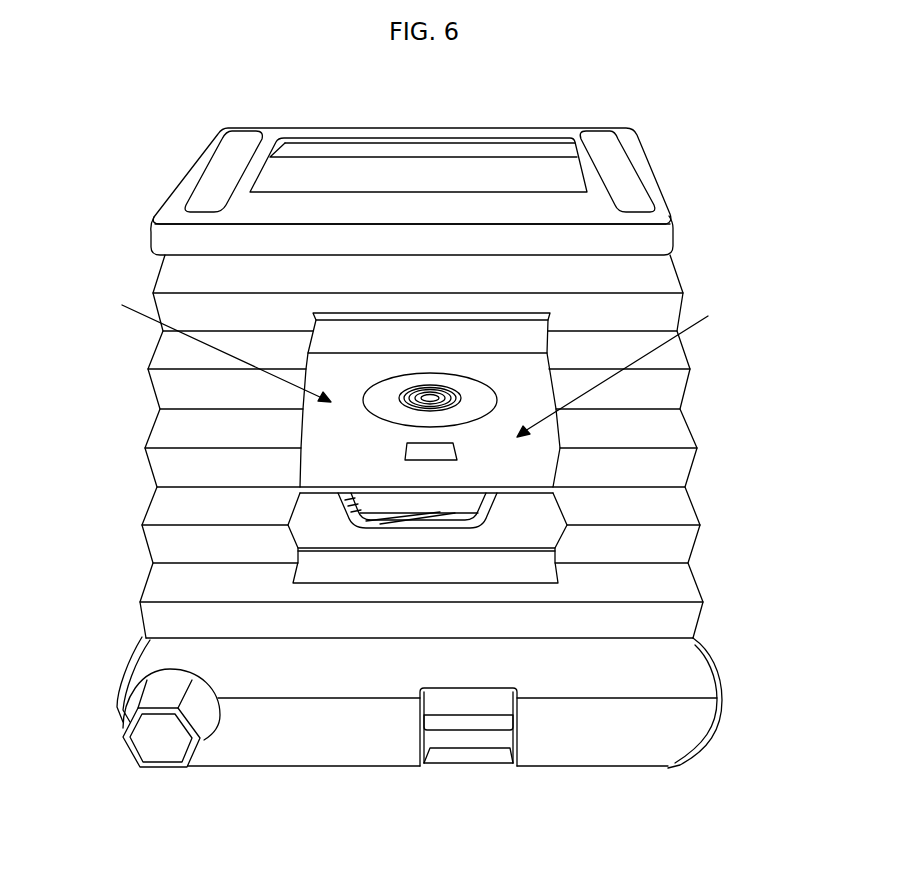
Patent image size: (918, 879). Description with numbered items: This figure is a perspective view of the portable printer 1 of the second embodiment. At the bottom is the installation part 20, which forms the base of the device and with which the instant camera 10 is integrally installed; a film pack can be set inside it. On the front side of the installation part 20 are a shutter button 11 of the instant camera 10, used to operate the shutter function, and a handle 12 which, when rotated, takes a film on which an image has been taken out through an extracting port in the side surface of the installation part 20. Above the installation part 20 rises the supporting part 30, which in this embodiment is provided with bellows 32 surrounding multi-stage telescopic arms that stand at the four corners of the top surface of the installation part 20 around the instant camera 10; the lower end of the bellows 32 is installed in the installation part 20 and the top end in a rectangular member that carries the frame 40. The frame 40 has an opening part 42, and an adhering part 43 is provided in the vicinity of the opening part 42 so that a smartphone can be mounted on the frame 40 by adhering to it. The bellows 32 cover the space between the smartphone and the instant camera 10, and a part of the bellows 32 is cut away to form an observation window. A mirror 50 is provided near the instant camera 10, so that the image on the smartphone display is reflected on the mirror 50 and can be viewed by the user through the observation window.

The portable printer 1 is at (143, 202).
The frame 40 is at (443, 130).
The opening part 42 is at (345, 178).
The adhering part 43 is at (243, 147).
The bellows 32 is at (668, 437).
The supporting part 30 is at (471, 446).
The instant camera 10 is at (407, 393).
The mirror 50 is at (427, 455).
The installation part 20 is at (383, 567).
The handle 12 is at (158, 750).
The shutter button 11 is at (473, 742).